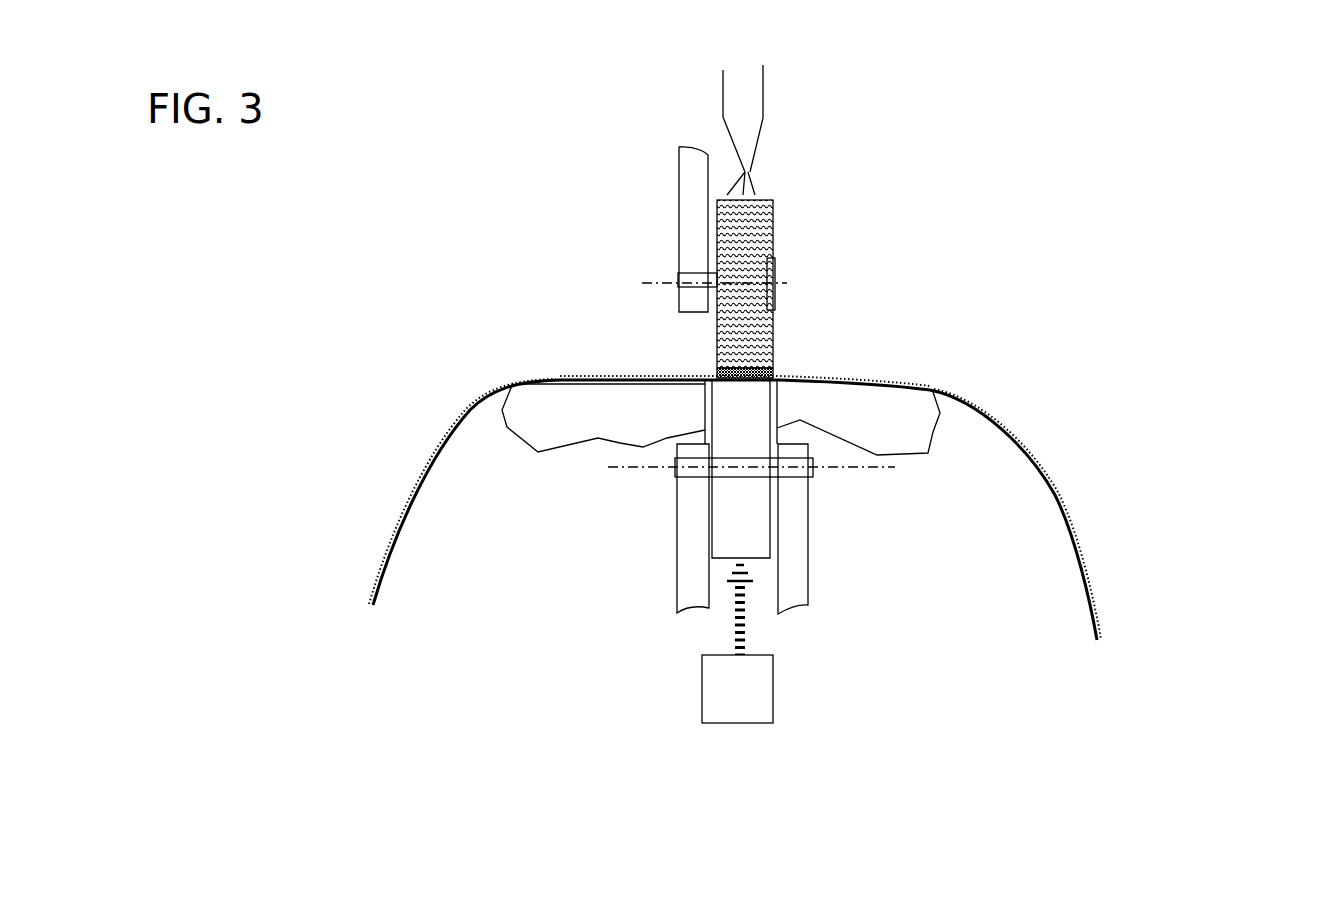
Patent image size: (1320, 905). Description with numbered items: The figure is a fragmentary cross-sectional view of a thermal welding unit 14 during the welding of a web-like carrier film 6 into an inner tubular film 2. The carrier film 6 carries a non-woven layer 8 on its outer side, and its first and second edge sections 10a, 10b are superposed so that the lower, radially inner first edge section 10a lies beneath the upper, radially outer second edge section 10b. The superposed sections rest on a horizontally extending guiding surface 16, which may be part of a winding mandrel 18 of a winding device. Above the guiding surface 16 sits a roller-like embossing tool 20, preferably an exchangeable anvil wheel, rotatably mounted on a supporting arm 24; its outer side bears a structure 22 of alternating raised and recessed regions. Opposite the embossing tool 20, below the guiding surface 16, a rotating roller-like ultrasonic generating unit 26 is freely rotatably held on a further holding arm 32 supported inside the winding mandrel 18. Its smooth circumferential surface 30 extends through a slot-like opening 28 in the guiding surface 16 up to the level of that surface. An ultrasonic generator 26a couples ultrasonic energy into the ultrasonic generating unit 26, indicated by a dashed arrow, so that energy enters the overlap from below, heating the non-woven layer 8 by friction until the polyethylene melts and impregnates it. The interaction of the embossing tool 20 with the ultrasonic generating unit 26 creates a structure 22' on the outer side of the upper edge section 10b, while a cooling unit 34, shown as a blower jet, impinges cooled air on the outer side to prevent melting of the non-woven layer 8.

The inner tubular film 2 is at (785, 461).
The web-like carrier film 6 is at (1060, 505).
The non-woven layer 8 is at (445, 423).
The first edge section 10a is at (713, 513).
The second edge section 10b is at (700, 374).
The thermal welding unit 14 is at (816, 210).
The guiding surface 16 is at (668, 378).
The winding mandrel 18 is at (567, 408).
The roller-like embossing tool 20 is at (834, 210).
The structure 22 is at (827, 205).
The structure 22' is at (854, 301).
The supporting arm 24 is at (695, 223).
The rotating roller-like ultrasonic generating unit 26 is at (747, 518).
The ultrasonic generator 26a is at (843, 665).
The slot-like opening 28 is at (707, 412).
The circumferential surface 30 is at (762, 565).
The further holding arm 32 is at (687, 537).
The cooling unit 34 is at (727, 135).